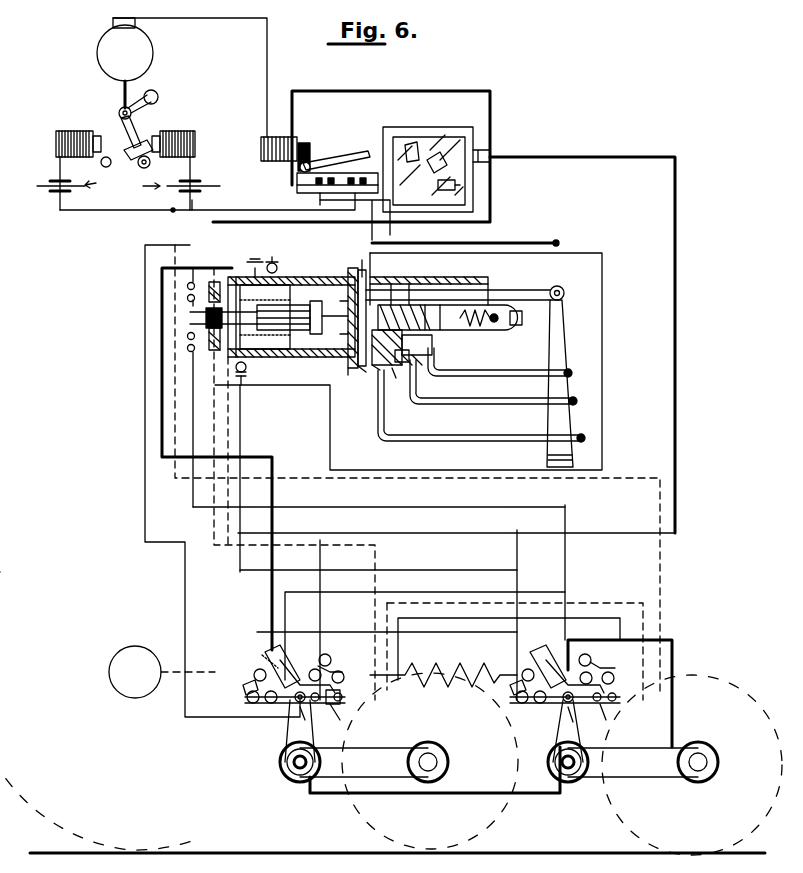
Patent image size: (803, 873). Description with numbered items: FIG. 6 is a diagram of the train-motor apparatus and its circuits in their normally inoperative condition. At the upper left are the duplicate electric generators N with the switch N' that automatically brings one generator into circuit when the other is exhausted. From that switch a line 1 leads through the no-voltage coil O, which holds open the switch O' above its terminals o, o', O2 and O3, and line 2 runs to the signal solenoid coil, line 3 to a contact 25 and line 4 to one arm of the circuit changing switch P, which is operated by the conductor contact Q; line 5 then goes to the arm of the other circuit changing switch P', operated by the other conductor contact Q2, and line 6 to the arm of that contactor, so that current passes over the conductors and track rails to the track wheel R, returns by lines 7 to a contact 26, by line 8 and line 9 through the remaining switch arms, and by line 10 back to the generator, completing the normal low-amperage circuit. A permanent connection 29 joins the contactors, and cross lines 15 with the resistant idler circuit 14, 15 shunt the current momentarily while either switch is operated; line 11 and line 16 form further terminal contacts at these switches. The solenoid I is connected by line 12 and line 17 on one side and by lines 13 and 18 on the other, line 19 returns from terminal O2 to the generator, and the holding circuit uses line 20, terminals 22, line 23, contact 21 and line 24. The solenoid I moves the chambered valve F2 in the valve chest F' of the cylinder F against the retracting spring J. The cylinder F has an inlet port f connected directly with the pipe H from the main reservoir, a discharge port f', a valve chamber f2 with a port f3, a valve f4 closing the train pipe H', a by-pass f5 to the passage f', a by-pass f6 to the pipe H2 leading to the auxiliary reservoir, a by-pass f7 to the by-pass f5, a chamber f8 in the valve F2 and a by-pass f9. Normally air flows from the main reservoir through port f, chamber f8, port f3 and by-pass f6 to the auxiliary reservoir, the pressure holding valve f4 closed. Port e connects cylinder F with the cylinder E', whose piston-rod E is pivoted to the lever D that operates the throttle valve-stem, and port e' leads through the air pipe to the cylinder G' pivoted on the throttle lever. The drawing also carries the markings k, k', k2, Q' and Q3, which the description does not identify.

The line 1 is at (212, 20).
The line 2 is at (390, 91).
The line 3 is at (492, 187).
The line 4 is at (162, 312).
The line 5 is at (408, 592).
The line 6 is at (596, 638).
The lines 7 is at (192, 671).
The line 8 is at (228, 404).
The line 9 is at (596, 603).
The line 10 is at (175, 240).
The line 11 is at (596, 157).
The line 12 is at (145, 316).
The line 13 is at (260, 374).
The resistant idler circuit 14 is at (443, 668).
The cross lines of resistant idler circuit 15 is at (444, 635).
The line 16 is at (390, 165).
The line 17 is at (320, 200).
The line 18 is at (250, 392).
The line 19 is at (262, 207).
The line 20 is at (186, 283).
The contact 21 is at (187, 351).
The terminals 22 is at (186, 297).
The line 23 is at (193, 258).
The line 24 is at (186, 336).
The contact 25 is at (232, 277).
The contact 26 is at (287, 484).
The permanent connection 29 is at (462, 793).
The electric generator N is at (128, 170).
The generator switch N' is at (127, 96).
The no-voltage coil O is at (279, 136).
The no-voltage switch O' is at (334, 151).
The switch terminal O2 is at (350, 157).
The switch terminal O3 is at (365, 153).
The switch contact o is at (324, 177).
The switch contact o' is at (331, 212).
The relay contact k is at (412, 129).
The relay contact k' is at (442, 135).
The relay contact k2 is at (456, 188).
The cylinder G' is at (465, 232).
The valve-chest cylinder F is at (278, 318).
The valve chest F' is at (321, 390).
The chambered valve F2 is at (490, 340).
The piston-rod E is at (465, 279).
The cylinder E' is at (429, 280).
The port e is at (342, 311).
The port e' is at (352, 260).
The solenoid I is at (262, 262).
The retracting spring J is at (520, 325).
The lever D is at (560, 383).
The inlet port f is at (413, 347).
The discharge port f' is at (355, 385).
The valve-chamber f2 is at (432, 345).
The port f3 is at (409, 284).
The valve f4 is at (425, 356).
The by-pass f5 is at (380, 372).
The by-pass f6 is at (396, 380).
The by-pass f7 is at (345, 335).
The valve chamber f8 is at (425, 310).
The by-pass f9 is at (391, 284).
The main reservoir pipe H is at (507, 366).
The train pipe H' is at (503, 385).
The auxiliary reservoir pipe H2 is at (582, 432).
The circuit changing switch P is at (294, 713).
The circuit changing switch P' is at (565, 713).
The conductor contact Q is at (430, 761).
The truck frame Q' is at (430, 767).
The conductor contact Q2 is at (692, 765).
The truck frame Q3 is at (643, 762).
The track wheel R is at (100, 711).